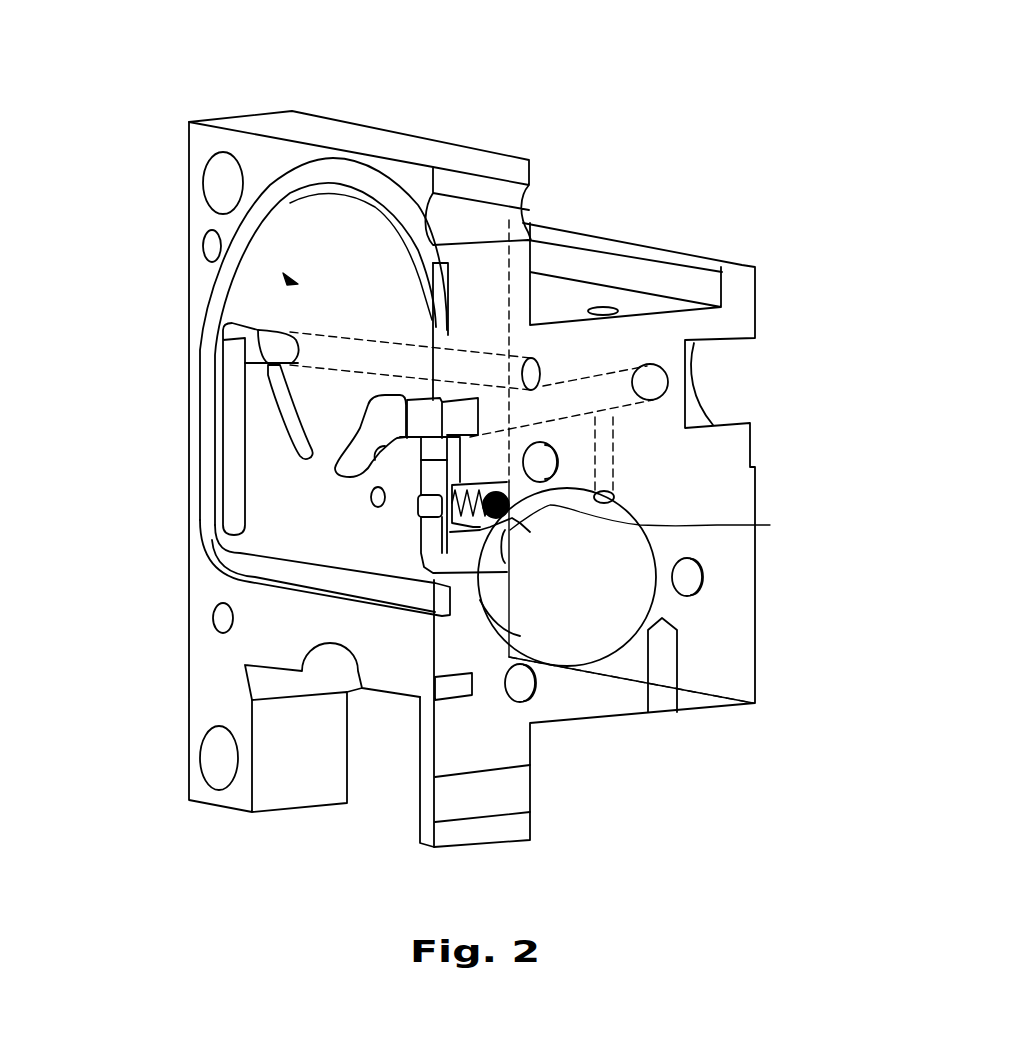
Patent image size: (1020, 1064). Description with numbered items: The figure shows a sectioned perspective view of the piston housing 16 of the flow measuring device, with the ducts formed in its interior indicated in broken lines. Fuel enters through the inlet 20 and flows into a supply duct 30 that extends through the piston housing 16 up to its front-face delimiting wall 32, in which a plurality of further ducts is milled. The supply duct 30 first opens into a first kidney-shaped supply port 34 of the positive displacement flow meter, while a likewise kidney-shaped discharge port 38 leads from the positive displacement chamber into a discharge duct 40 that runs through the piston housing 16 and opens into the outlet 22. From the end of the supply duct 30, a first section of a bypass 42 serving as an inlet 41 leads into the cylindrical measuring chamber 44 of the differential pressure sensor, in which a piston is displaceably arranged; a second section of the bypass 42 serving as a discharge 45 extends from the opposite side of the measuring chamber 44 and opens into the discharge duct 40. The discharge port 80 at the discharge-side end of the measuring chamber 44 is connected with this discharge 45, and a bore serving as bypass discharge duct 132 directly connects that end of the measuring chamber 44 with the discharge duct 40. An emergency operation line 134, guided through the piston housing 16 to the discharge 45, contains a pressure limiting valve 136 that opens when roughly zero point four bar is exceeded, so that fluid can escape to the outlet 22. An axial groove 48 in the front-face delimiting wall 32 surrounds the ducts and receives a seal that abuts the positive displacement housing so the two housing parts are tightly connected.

The piston housing 16 is at (450, 153).
The inlet 20 is at (542, 370).
The outlet 22 is at (668, 382).
The supply duct 30 is at (368, 350).
The front-face delimiting wall 32 is at (286, 279).
The first kidney-shaped supply port 34 is at (293, 417).
The discharge port 38 is at (335, 466).
The discharge duct 40 is at (607, 393).
The inlet of the bypass 41 is at (233, 473).
The bypass 42 is at (458, 429).
The measuring chamber 44 is at (627, 558).
The discharge of the bypass 45 is at (435, 468).
The axial groove 48 is at (312, 175).
The discharge port 80 is at (507, 552).
The bypass discharge duct 132 is at (597, 457).
The emergency operation line 134 is at (512, 488).
The pressure limiting valve 136 is at (517, 627).